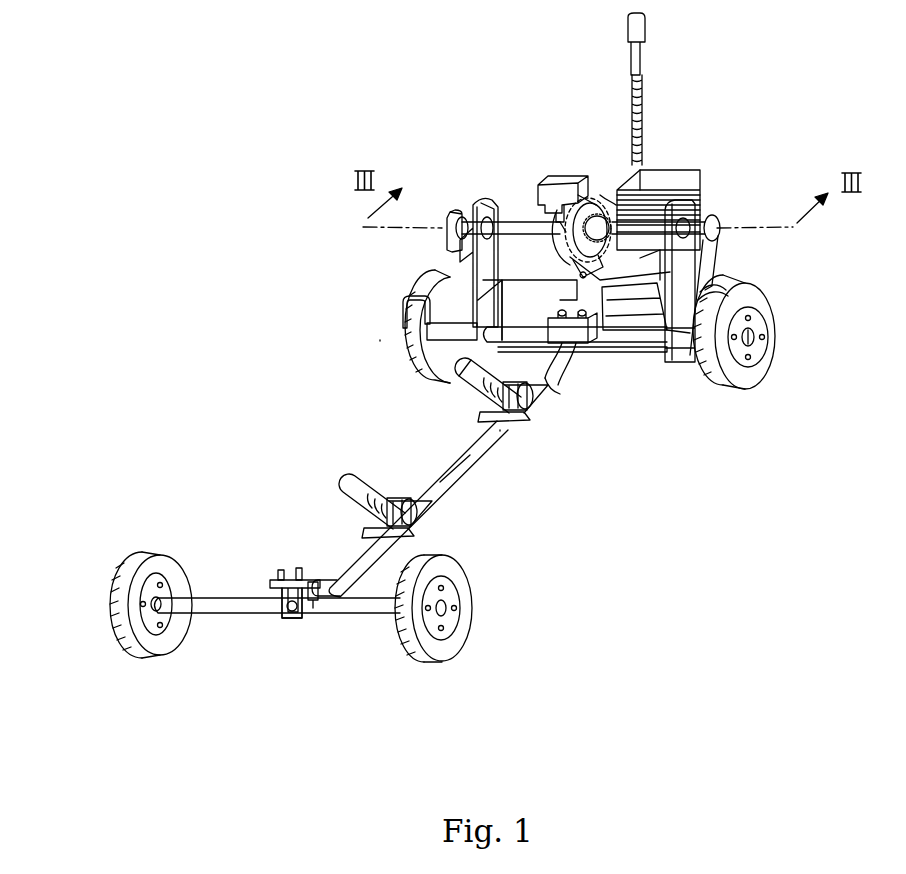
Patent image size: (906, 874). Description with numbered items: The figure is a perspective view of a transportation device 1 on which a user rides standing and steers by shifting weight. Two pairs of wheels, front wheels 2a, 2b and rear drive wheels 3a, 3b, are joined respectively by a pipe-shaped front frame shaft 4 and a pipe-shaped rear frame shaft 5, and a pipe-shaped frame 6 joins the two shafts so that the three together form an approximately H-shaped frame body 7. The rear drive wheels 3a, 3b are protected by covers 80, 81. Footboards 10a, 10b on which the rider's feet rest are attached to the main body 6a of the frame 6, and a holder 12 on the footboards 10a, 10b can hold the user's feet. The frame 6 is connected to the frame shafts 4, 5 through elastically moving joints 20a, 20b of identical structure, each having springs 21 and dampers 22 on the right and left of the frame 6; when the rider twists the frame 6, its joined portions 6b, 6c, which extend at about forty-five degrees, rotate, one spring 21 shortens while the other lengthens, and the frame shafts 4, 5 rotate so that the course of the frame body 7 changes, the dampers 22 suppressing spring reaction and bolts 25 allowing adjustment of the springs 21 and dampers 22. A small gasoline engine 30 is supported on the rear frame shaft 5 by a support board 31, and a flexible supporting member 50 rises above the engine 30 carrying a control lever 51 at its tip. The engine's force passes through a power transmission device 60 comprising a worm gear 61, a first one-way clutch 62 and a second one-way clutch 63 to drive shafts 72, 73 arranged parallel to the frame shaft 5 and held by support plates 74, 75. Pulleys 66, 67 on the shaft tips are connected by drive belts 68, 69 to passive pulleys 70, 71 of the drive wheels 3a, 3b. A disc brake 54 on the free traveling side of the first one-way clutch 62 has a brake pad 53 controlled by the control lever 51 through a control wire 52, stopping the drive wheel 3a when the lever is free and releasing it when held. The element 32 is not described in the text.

The transportation device 1 is at (305, 415).
The front wheel 2a is at (110, 613).
The front wheel 2b is at (447, 650).
The rear drive wheel 3a is at (418, 330).
The rear drive wheel 3b is at (770, 357).
The front frame shaft 4 is at (227, 608).
The rear frame shaft 5 is at (622, 343).
The frame 6 is at (452, 480).
The main body of frame 6a is at (432, 480).
The joined portion of frame 6b is at (324, 578).
The joined portion of frame 6c is at (567, 353).
The frame body 7 is at (513, 457).
The footboard 10a is at (545, 395).
The footboard 10b is at (428, 507).
The holder 12 is at (472, 385).
The joint 20a is at (287, 626).
The joint 20b is at (576, 351).
The spring 21 is at (310, 600).
The damper 22 is at (305, 596).
The bolt 25 is at (290, 578).
The gasoline engine 30 is at (667, 173).
The support board 31 is at (558, 349).
The wheel hub 32 is at (697, 350).
The supporting member 50 is at (640, 117).
The control lever 51 is at (623, 32).
The control wire 52 is at (600, 195).
The brake pad 53 is at (545, 213).
The disc brake 54 is at (540, 217).
The power transmission device 60 is at (513, 193).
The worm gear 61 is at (647, 178).
The first one-way clutch 62 is at (560, 217).
The second one-way clutch 63 is at (700, 172).
The pulley 66 is at (450, 220).
The pulley 67 is at (718, 228).
The drive belt 68 is at (452, 245).
The drive belt 69 is at (718, 257).
The passive pulley 70 is at (440, 355).
The passive pulley 71 is at (700, 370).
The drive shaft 72 is at (512, 230).
The drive shaft 73 is at (718, 288).
The support plate 74 is at (493, 270).
The support plate 75 is at (755, 355).
The cover 80 is at (410, 298).
The cover 81 is at (748, 313).